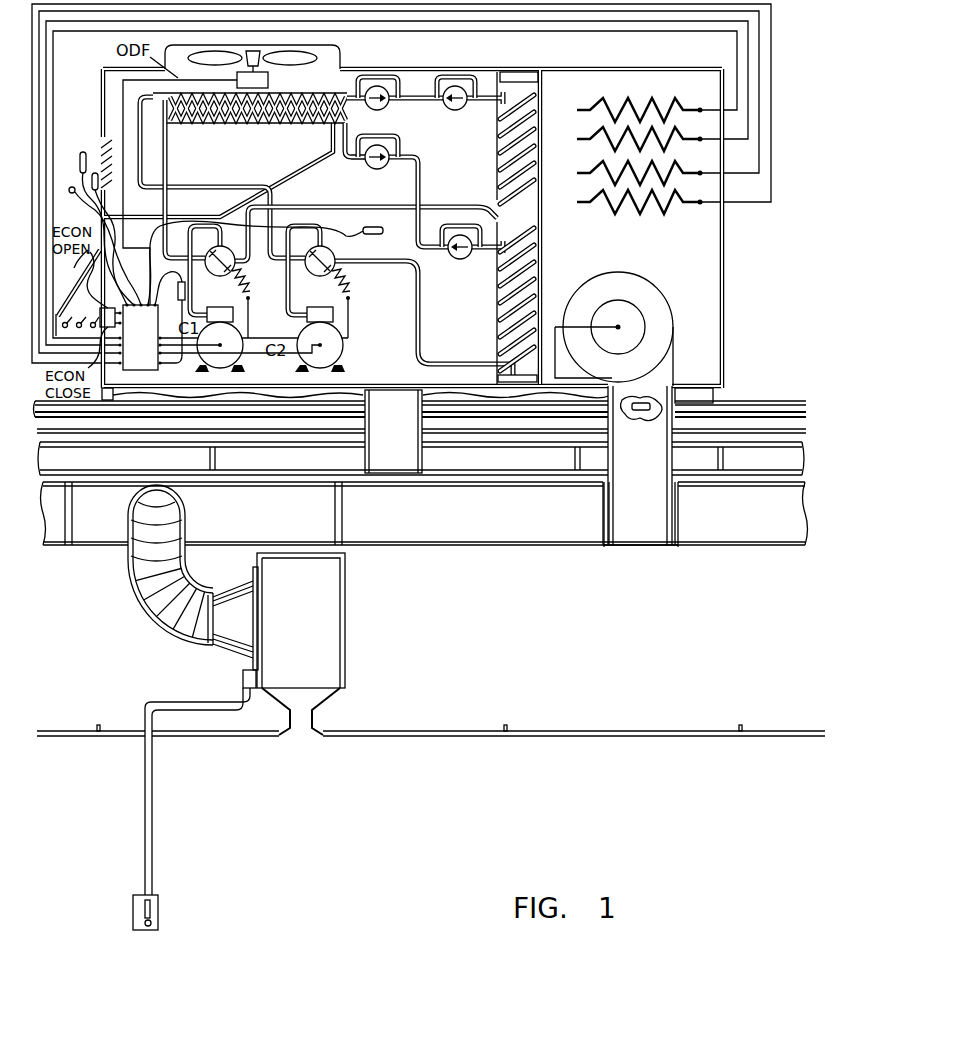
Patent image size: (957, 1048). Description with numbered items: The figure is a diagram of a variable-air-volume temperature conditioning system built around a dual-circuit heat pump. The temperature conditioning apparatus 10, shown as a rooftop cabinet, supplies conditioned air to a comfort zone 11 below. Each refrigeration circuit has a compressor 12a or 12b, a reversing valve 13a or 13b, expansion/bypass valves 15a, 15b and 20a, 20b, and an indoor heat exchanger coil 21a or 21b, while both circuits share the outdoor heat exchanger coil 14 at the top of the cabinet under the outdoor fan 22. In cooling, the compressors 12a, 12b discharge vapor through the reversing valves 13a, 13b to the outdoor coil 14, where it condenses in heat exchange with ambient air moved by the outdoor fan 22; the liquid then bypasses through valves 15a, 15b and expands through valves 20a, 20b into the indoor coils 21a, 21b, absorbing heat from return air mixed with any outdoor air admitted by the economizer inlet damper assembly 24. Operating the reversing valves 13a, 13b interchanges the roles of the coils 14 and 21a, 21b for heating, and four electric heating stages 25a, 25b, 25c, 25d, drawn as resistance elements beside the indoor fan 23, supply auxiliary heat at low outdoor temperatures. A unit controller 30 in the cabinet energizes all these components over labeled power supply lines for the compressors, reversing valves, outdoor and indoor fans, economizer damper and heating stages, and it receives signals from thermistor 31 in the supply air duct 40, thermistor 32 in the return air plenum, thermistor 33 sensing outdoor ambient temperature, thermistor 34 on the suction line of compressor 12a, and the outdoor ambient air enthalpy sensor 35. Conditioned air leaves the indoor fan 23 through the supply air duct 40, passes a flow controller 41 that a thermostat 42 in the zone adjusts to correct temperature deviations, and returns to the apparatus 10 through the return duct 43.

The temperature conditioning apparatus 10 is at (729, 319).
The comfort zone 11 is at (421, 862).
The compressor 12a is at (241, 360).
The compressor 12b is at (341, 360).
The reversing valve 13a is at (233, 271).
The reversing valve 13b is at (333, 271).
The outdoor heat exchanger coil 14 is at (265, 130).
The expansion/bypass valve 15a is at (381, 110).
The expansion/bypass valve 15b is at (381, 169).
The expansion/bypass valve 20a is at (456, 111).
The expansion/bypass valve 20b is at (455, 259).
The indoor heat exchanger coil 21a is at (497, 163).
The indoor heat exchanger coil 21b is at (497, 347).
The outdoor fan 22 is at (268, 80).
The indoor fan 23 is at (658, 282).
The economizer inlet damper assembly 24 is at (82, 293).
The electric heating stage 25a is at (395, 184).
The electric heating stage 25b is at (397, 183).
The electric heating stage 25c is at (399, 182).
The electric heating stage 25d is at (401, 183).
The unit controller 30 is at (151, 348).
The thermistor 31 is at (638, 419).
The thermistor 32 is at (269, 263).
The thermistor 33 is at (83, 153).
The thermistor 34 is at (185, 292).
The outdoor ambient air enthalpy sensor 35 is at (88, 205).
The supply air duct 40 is at (430, 530).
The flow controller 41 is at (303, 648).
The thermostat 42 is at (159, 912).
The duct 43 is at (312, 468).